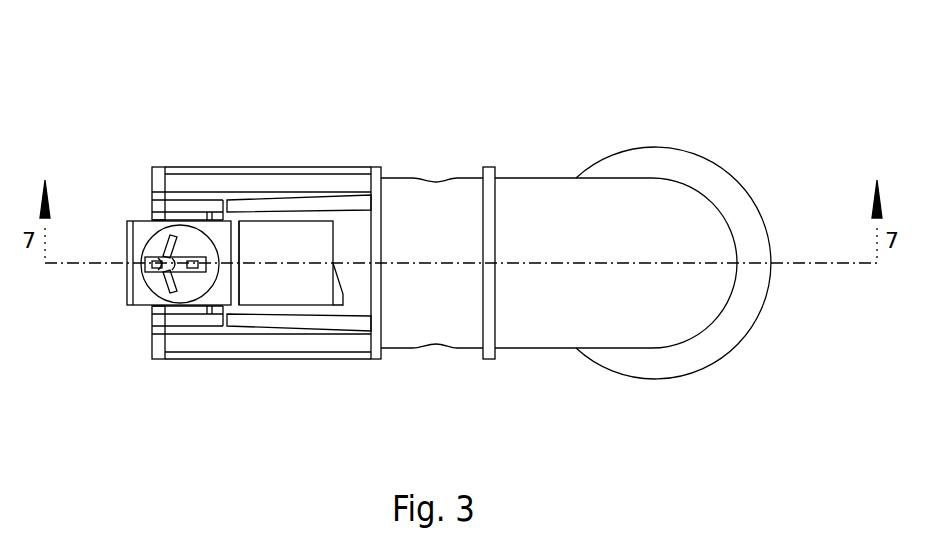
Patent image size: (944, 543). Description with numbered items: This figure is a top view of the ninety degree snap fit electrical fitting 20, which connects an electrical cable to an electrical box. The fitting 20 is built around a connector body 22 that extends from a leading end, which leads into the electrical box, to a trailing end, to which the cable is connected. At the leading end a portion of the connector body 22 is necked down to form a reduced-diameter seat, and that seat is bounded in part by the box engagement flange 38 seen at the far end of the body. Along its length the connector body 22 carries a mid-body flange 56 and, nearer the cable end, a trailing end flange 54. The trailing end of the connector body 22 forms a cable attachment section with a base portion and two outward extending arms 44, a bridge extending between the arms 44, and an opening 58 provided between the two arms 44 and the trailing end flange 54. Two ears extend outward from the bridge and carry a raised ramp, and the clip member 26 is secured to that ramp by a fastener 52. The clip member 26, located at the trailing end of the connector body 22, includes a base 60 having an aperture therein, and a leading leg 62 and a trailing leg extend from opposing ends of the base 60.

The ninety degree snap fit electrical fitting 20 is at (140, 92).
The connector body 22 is at (550, 350).
The clip member 26 is at (252, 312).
The box engagement flange 38 is at (732, 176).
The outward extending arms 44 is at (262, 167).
The fastener 52 is at (155, 243).
The trailing end flange 54 is at (376, 167).
The mid-body flange 56 is at (490, 167).
The opening 58 is at (303, 321).
The base 60 is at (142, 307).
The leading leg 62 is at (296, 255).